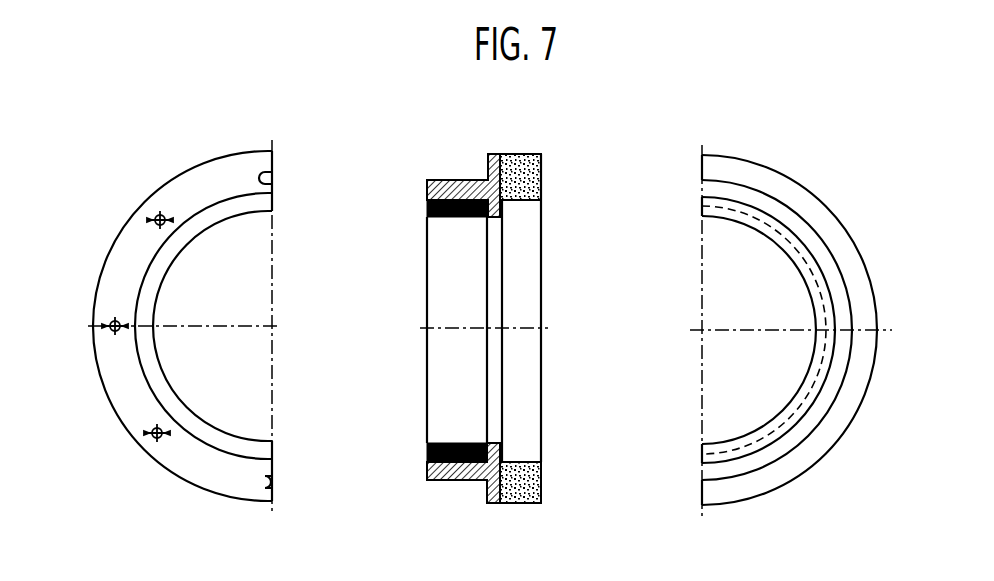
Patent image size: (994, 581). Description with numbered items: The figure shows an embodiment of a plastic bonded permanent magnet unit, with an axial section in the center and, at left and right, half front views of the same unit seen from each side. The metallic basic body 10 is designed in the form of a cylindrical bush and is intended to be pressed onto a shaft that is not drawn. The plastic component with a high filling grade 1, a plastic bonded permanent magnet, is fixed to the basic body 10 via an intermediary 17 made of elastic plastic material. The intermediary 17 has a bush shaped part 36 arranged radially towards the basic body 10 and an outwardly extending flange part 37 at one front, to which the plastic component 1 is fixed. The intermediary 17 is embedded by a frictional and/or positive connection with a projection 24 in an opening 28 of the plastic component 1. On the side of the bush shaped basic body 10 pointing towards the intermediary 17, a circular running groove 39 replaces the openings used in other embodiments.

The plastic component with a high filling grade 1 is at (222, 182).
The basic body 10 is at (433, 219).
The intermediary 17 is at (175, 266).
The projection 24 is at (152, 212).
The opening 28 is at (541, 194).
The bush shaped part 36 is at (440, 182).
The flange part 37 is at (480, 182).
The circular running groove 39 is at (452, 476).